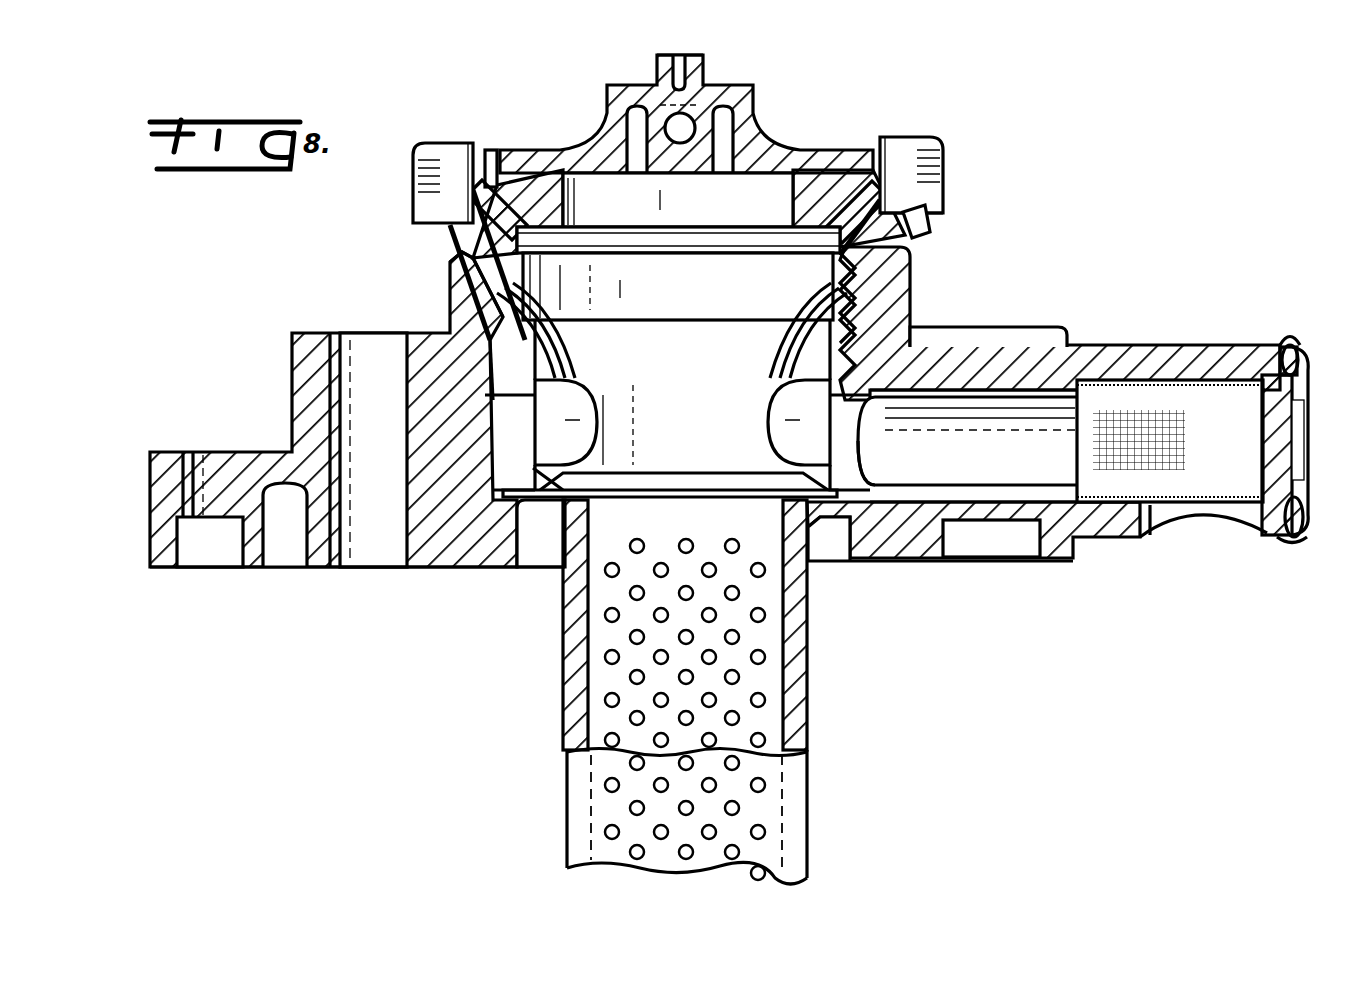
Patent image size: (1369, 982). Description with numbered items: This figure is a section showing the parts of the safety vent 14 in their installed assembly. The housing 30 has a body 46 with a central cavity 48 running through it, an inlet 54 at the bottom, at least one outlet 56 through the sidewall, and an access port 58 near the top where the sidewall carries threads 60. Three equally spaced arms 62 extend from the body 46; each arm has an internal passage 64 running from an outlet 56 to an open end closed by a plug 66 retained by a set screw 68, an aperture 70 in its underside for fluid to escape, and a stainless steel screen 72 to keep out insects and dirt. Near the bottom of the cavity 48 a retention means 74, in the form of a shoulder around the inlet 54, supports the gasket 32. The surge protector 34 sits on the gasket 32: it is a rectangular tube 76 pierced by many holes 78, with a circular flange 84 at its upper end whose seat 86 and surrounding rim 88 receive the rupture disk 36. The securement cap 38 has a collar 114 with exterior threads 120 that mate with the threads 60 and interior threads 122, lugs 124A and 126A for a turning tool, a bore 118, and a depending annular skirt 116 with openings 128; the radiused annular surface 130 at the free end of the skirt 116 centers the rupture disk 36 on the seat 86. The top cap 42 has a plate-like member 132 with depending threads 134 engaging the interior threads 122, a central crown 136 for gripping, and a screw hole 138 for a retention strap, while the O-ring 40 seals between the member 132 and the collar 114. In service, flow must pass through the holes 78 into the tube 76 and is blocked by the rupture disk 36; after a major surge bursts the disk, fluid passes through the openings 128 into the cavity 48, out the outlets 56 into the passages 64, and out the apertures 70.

The safety vent 14 is at (508, 635).
The housing 30 is at (905, 560).
The gasket 32 is at (465, 545).
The surge protector 34 is at (563, 818).
The rupture disk 36 is at (744, 475).
The securement cap 38 is at (948, 138).
The O-ring 40 is at (495, 183).
The top cap 42 is at (770, 128).
The body 46 is at (1010, 330).
The central cavity 48 is at (517, 442).
The inlet 54 is at (830, 562).
The outlet 56 is at (866, 426).
The access port 58 is at (460, 252).
The threads 60 is at (455, 320).
The arm 62 is at (1200, 347).
The internal passage 64 is at (1000, 500).
The plug 66 is at (1295, 458).
The set screw 68 is at (1297, 334).
The aperture 70 is at (1157, 505).
The stainless steel screen 72 is at (1200, 380).
The retention means 74 is at (514, 562).
The tube 76 is at (810, 690).
The holes 78 is at (765, 740).
The flange 84 is at (866, 460).
The seat 86 is at (528, 468).
The rim 88 is at (880, 492).
The collar 114 is at (932, 228).
The annular skirt 116 is at (818, 363).
The bore 118 is at (835, 292).
The exterior threads 120 is at (452, 285).
The interior threads 122 is at (830, 243).
The lug 124A is at (945, 182).
The lug 126A is at (420, 180).
The openings 128 is at (592, 400).
The radiused annular surface 130 is at (585, 505).
The plate-like member 132 is at (832, 160).
The threads 134 is at (420, 216).
The central crown 136 is at (738, 100).
The screw hole 138 is at (675, 58).